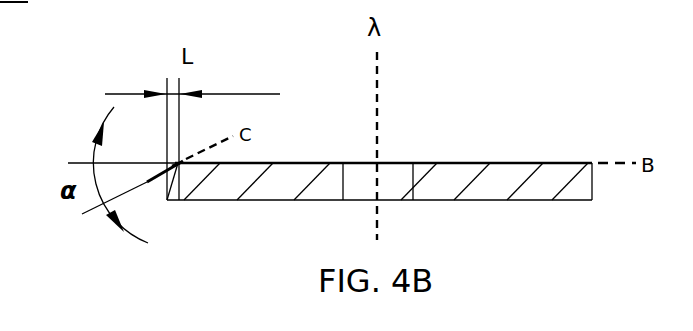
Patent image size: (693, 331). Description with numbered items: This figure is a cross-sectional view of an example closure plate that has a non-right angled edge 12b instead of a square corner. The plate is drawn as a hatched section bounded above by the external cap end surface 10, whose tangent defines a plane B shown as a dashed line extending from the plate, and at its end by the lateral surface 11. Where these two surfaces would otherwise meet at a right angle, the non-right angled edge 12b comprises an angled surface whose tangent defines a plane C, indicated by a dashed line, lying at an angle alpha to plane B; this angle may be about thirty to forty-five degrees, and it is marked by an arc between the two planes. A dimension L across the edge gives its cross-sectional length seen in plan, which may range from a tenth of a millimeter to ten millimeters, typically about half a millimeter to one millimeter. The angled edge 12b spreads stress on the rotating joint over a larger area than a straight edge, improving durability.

The external cap end surface 10 is at (307, 163).
The lateral surface 11 is at (165, 198).
The non-right angled edge 12b is at (172, 168).